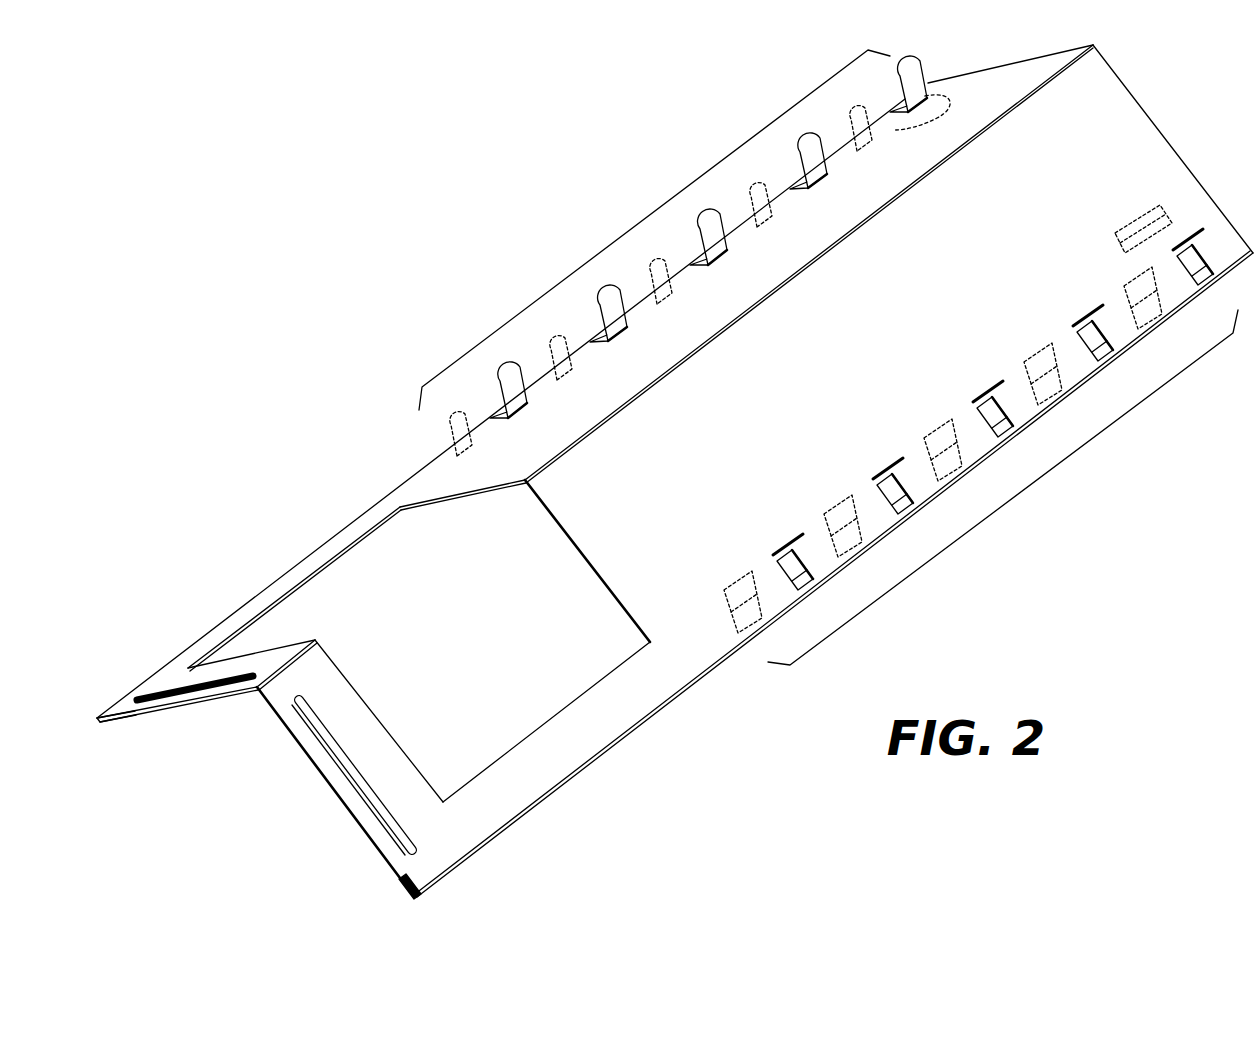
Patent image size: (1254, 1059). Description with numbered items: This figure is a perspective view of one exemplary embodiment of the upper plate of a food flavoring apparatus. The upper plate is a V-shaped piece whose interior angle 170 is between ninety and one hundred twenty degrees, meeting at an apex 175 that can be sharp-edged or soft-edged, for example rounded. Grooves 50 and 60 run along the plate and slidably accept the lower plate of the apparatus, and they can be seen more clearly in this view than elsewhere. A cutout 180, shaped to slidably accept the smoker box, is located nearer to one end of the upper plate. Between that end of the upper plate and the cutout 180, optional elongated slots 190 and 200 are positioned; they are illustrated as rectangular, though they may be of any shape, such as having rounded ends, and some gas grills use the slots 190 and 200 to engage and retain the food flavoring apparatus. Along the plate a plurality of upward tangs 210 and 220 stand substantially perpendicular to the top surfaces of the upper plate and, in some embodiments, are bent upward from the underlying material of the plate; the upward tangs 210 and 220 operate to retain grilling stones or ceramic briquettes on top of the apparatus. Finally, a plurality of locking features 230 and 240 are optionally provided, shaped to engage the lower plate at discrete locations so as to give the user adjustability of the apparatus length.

The groove 50 is at (112, 728).
The groove 60 is at (402, 882).
The interior angle 170 is at (237, 712).
The apex 175 is at (590, 434).
The cutout 180 is at (540, 692).
The elongated slot 190 is at (168, 690).
The elongated slot 200 is at (403, 815).
The upward tangs 210 is at (643, 220).
The upward tangs 220 is at (1035, 492).
The locking feature 230 is at (1168, 212).
The locking feature 240 is at (953, 88).